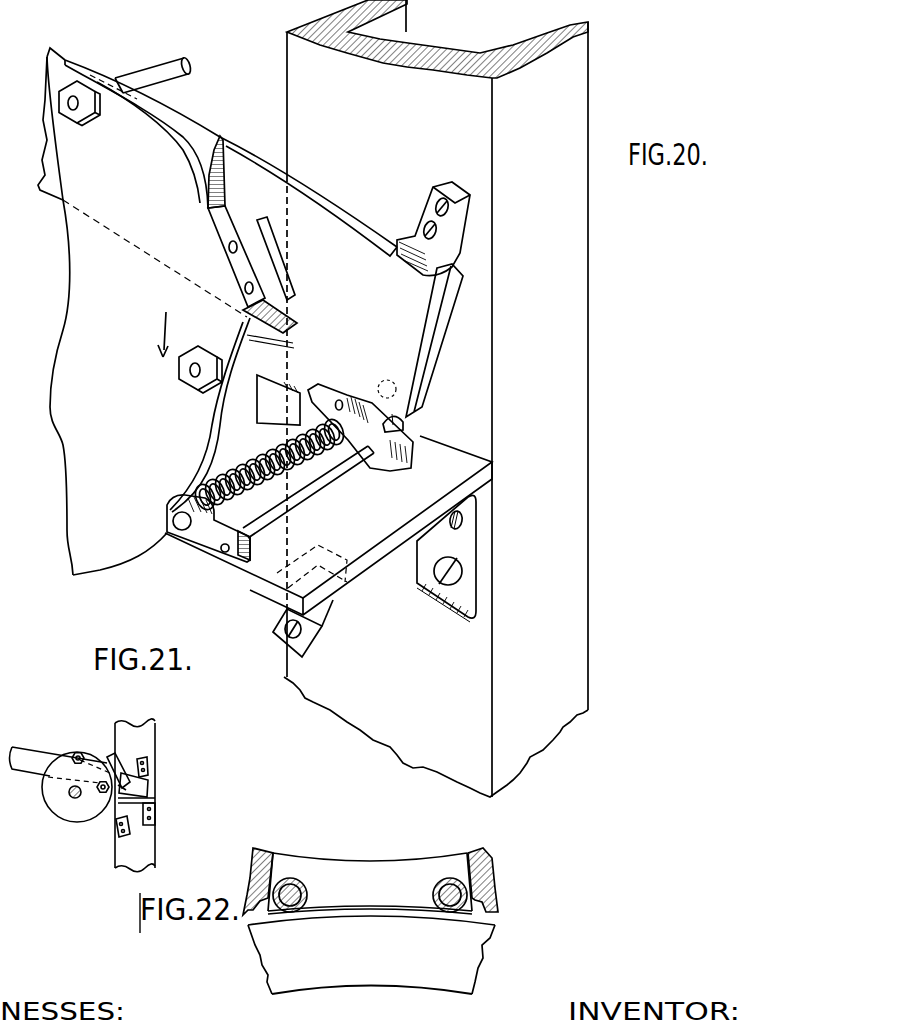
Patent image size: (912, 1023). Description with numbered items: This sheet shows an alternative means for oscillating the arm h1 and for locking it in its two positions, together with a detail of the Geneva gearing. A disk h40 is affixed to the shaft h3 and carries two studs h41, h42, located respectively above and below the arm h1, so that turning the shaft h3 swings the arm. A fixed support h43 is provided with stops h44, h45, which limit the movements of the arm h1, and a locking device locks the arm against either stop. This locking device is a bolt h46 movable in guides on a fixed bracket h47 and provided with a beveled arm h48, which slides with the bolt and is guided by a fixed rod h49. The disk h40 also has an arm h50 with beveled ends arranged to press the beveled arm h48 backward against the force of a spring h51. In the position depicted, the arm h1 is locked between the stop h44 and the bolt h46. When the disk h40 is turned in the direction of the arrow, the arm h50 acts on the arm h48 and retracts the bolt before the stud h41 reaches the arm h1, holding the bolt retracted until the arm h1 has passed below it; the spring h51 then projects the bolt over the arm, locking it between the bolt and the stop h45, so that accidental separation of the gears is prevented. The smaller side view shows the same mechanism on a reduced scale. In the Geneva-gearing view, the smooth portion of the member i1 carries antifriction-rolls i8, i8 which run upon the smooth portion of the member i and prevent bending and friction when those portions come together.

In FIG. 20, the arm h1 is at (197, 135).
In FIG. 21, the arm h1 is at (36, 759).
In FIG. 21, the shaft h3 is at (70, 800).
In FIG. 20, the disk h40 is at (82, 492).
In FIG. 21, the disk h40 is at (87, 818).
In FIG. 20, the stud h41 is at (167, 58).
In FIG. 20, the stud h42 is at (247, 337).
In FIG. 20, the fixed support h43 is at (422, 72).
In FIG. 20, the stop h44 is at (452, 245).
In FIG. 21, the stop h44 is at (150, 772).
In FIG. 20, the stop h45 is at (325, 613).
In FIG. 21, the stop h45 is at (123, 832).
In FIG. 20, the bolt h46 is at (373, 387).
In FIG. 20, the fixed bracket h47 is at (387, 547).
In FIG. 20, the beveled arm h48 is at (191, 415).
In FIG. 20, the fixed rod h49 is at (337, 486).
In FIG. 20, the arm h50 is at (222, 238).
In FIG. 20, the spring h51 is at (257, 468).
In FIG. 22, the member of the Geneva gearing i is at (277, 978).
In FIG. 22, the member of the Geneva gearing i1 is at (257, 850).
In FIG. 22, the antifriction-rolls i8 is at (303, 885).